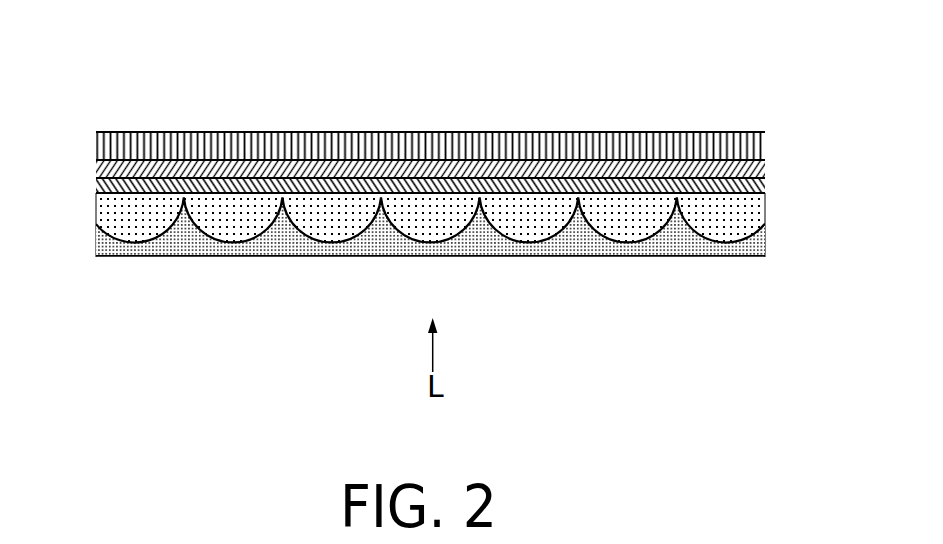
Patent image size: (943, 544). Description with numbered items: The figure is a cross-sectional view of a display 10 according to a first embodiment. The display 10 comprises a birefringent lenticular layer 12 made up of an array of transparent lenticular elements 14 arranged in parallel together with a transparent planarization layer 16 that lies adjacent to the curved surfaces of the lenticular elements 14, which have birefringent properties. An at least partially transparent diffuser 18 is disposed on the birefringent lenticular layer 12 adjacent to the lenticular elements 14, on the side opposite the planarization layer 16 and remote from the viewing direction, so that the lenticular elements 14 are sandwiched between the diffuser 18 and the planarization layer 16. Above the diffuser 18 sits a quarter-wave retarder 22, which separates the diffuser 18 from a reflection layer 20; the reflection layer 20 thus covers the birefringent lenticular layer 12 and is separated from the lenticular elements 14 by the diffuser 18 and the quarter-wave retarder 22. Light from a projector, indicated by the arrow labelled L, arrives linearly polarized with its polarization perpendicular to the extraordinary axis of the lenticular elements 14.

The display 10 is at (140, 80).
The birefringent lenticular layer 12 is at (75, 193).
The lenticular elements 14 is at (232, 233).
The planarization layer 16 is at (185, 245).
The diffuser 18 is at (755, 188).
The reflection layer 20 is at (755, 143).
The quarter-wave retarder 22 is at (96, 171).